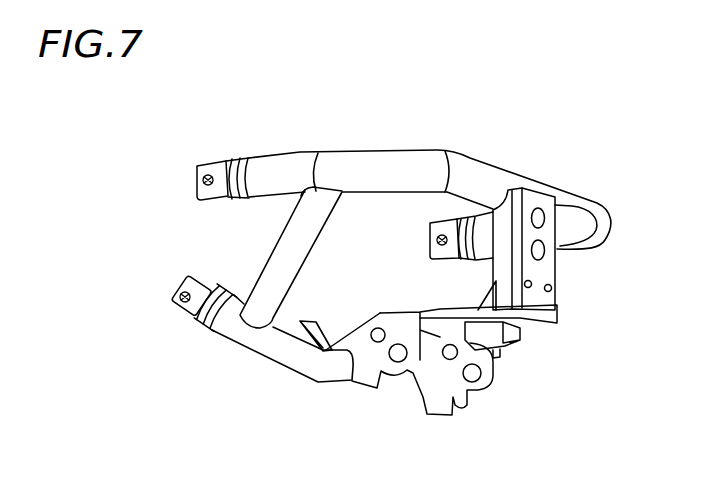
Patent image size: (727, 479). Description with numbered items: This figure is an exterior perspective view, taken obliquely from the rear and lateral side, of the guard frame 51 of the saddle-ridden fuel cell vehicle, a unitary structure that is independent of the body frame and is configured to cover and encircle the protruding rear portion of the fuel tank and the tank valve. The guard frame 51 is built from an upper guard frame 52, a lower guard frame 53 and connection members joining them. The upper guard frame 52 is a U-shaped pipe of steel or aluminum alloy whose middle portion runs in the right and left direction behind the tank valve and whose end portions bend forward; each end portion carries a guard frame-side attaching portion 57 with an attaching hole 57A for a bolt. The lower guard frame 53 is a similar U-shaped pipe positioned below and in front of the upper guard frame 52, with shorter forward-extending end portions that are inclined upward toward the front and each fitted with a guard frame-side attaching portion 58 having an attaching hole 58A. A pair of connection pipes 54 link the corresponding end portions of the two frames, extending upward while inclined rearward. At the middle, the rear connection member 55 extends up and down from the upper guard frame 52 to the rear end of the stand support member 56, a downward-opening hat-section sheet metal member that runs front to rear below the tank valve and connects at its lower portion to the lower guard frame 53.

The guard frame 51 is at (598, 145).
The upper guard frame 52 is at (462, 162).
The lower guard frame 53 is at (265, 353).
The connection pipe 54 is at (275, 250).
The rear connection member 55 is at (548, 275).
The stand support member 56 is at (407, 370).
The guard frame-side attaching portion 57 is at (232, 158).
The attaching hole 57A is at (200, 178).
The guard frame-side attaching portion 58 is at (187, 312).
The attaching hole 58A is at (175, 293).